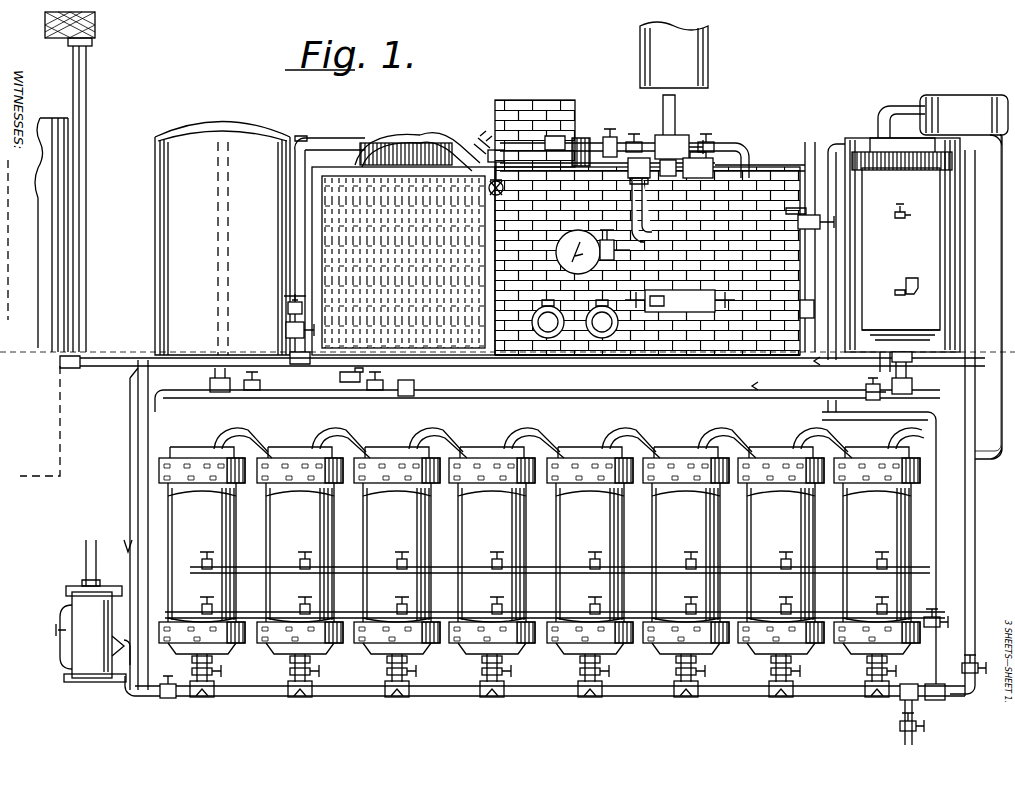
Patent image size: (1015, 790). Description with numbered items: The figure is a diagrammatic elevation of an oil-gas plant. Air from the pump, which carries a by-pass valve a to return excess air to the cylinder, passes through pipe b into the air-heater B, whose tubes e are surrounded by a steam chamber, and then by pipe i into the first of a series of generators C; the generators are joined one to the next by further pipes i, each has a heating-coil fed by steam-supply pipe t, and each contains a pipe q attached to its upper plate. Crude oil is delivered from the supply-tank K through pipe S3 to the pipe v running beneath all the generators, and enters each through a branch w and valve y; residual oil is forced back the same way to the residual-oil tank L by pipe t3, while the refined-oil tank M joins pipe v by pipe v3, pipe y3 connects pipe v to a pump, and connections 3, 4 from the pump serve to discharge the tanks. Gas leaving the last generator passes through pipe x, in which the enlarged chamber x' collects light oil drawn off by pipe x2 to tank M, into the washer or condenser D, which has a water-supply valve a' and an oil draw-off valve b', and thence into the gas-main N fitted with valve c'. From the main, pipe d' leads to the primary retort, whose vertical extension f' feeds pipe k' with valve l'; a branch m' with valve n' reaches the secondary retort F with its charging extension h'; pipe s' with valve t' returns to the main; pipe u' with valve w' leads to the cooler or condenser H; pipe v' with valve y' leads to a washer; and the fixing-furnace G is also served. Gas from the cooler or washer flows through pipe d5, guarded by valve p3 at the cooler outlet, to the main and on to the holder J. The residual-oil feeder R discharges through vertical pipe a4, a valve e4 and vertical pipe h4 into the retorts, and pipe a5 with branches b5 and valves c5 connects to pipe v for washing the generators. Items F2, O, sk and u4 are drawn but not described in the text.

The holder J is at (80, 128).
The supply-tank K is at (157, 186).
The pipe d5 is at (345, 146).
The cooler or condenser H is at (330, 340).
The pipe v' is at (417, 133).
The valve y' is at (478, 125).
The pipe u' is at (505, 128).
The valve w' is at (488, 170).
The fixing-furnace G is at (553, 104).
The secondary retort F is at (647, 261).
The furnace wall F2 is at (762, 255).
The valve t' is at (526, 236).
The valve n' is at (615, 253).
The branch m' is at (652, 207).
The furnace doors O is at (575, 315).
The vertical extension h' is at (617, 131).
The pipe k' is at (630, 146).
The valve e4 is at (634, 134).
The vertical pipe a4 is at (678, 110).
The residual-oil feeder R is at (708, 62).
The valve l' is at (710, 137).
The vertical extension f' is at (746, 142).
The vertical pipe h4 is at (752, 164).
The pipe d' is at (802, 229).
The residual-oil tank L is at (794, 146).
The valve c' is at (836, 237).
The tubes e is at (806, 212).
The receiving-tank M is at (960, 215).
The pipe x2 is at (940, 150).
The pipe x is at (898, 122).
The enlarged chamber x' is at (964, 104).
The pipe v3 is at (976, 600).
The gas-main N is at (110, 368).
The pipe S3 is at (138, 450).
The connection 3 is at (212, 380).
The valve p3 is at (290, 310).
The branches b5 is at (414, 382).
The pipe s' is at (448, 377).
The pipe a5 is at (938, 560).
The connection 4 is at (871, 382).
The valves c5 is at (912, 364).
The air-heater B is at (202, 572).
The generators C is at (588, 572).
The pipe i is at (836, 444).
The steam-supply pipe t is at (560, 560).
The pipe q is at (555, 606).
The stop cock sk is at (248, 575).
The pipe v is at (545, 697).
The branch w is at (586, 672).
The valve y is at (567, 669).
The valve u4 is at (936, 632).
The pipe y3 is at (914, 724).
The pipe t3 is at (932, 540).
The by-pass valve a is at (78, 611).
The pipe b is at (117, 676).
The valve b' is at (899, 219).
The washer or condenser D is at (904, 252).
The valve a' is at (897, 281).